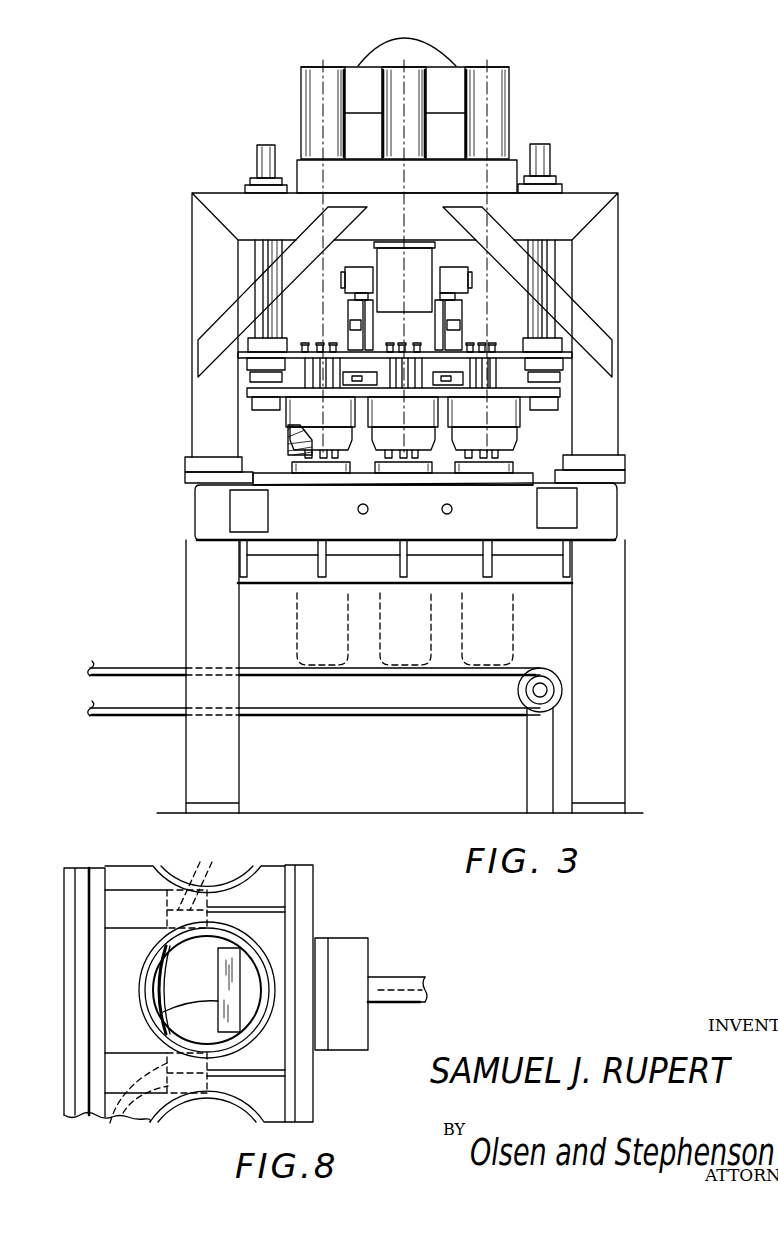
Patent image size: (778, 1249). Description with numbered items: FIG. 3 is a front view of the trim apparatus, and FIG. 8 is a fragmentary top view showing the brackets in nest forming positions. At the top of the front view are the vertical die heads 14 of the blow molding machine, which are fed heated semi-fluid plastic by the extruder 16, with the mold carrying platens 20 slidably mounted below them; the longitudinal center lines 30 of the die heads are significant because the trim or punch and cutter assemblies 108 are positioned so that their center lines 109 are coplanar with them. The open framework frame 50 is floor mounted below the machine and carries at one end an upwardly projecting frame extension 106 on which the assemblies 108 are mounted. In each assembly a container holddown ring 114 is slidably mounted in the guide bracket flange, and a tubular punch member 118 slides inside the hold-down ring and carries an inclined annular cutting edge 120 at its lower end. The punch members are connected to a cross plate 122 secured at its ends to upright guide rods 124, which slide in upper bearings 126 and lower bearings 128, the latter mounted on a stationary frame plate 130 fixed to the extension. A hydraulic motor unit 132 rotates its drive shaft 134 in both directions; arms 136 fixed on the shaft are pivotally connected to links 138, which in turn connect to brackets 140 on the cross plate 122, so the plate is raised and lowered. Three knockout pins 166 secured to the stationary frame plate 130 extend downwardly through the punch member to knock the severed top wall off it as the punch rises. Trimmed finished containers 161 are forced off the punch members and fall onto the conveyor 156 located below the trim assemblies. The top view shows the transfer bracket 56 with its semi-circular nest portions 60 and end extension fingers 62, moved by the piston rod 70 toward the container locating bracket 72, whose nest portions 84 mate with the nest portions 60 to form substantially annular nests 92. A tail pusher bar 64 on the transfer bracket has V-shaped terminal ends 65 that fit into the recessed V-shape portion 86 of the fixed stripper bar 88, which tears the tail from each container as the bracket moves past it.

In FIG. 3, the die heads 14 is at (314, 75).
In FIG. 3, the extruder 16 is at (404, 46).
In FIG. 3, the mold carrying platens 20 is at (392, 187).
In FIG. 3, the longitudinal center lines 30 is at (324, 173).
In FIG. 3, the frame 50 is at (624, 543).
In FIG. 8, the transfer bracket 56 is at (300, 1087).
In FIG. 8, the nest portions 60 is at (258, 925).
In FIG. 8, the end extension fingers 62 is at (164, 995).
In FIG. 8, the tail pusher bar 64 is at (218, 1017).
In FIG. 8, the terminal ends 65 is at (186, 1000).
In FIG. 8, the piston rod 70 is at (400, 985).
In FIG. 3, the container locating bracket 72 is at (262, 484).
In FIG. 8, the container locating bracket 72 is at (84, 1010).
In FIG. 8, the nest portions 84 is at (163, 962).
In FIG. 8, the recessed V-shape portion 86 is at (163, 985).
In FIG. 8, the stripper bar 88 is at (175, 979).
In FIG. 3, the annular nests 92 is at (351, 473).
In FIG. 8, the annular nests 92 is at (124, 968).
In FIG. 3, the frame extension 106 is at (608, 300).
In FIG. 3, the trim or punch and cutter assemblies 108 is at (305, 420).
In FIG. 3, the center lines 109 is at (320, 433).
In FIG. 3, the container holddown ring 114 is at (289, 438).
In FIG. 3, the tubular punch member 118 is at (288, 442).
In FIG. 3, the annular cutting edge 120 is at (300, 458).
In FIG. 3, the cross plate 122 is at (561, 392).
In FIG. 3, the upright guide rods 124 is at (262, 157).
In FIG. 3, the upper bearings 126 is at (560, 182).
In FIG. 3, the lower bearings 128 is at (545, 356).
In FIG. 3, the stationary frame plate 130 is at (506, 352).
In FIG. 3, the hydraulic motor unit 132 is at (388, 294).
In FIG. 3, the drive shaft 134 is at (346, 282).
In FIG. 3, the arms 136 is at (355, 298).
In FIG. 3, the links 138 is at (347, 327).
In FIG. 3, the brackets 140 is at (370, 384).
In FIG. 3, the conveyor 156 is at (450, 708).
In FIG. 3, the finished containers 161 is at (312, 637).
In FIG. 3, the knockout pins 166 is at (496, 345).